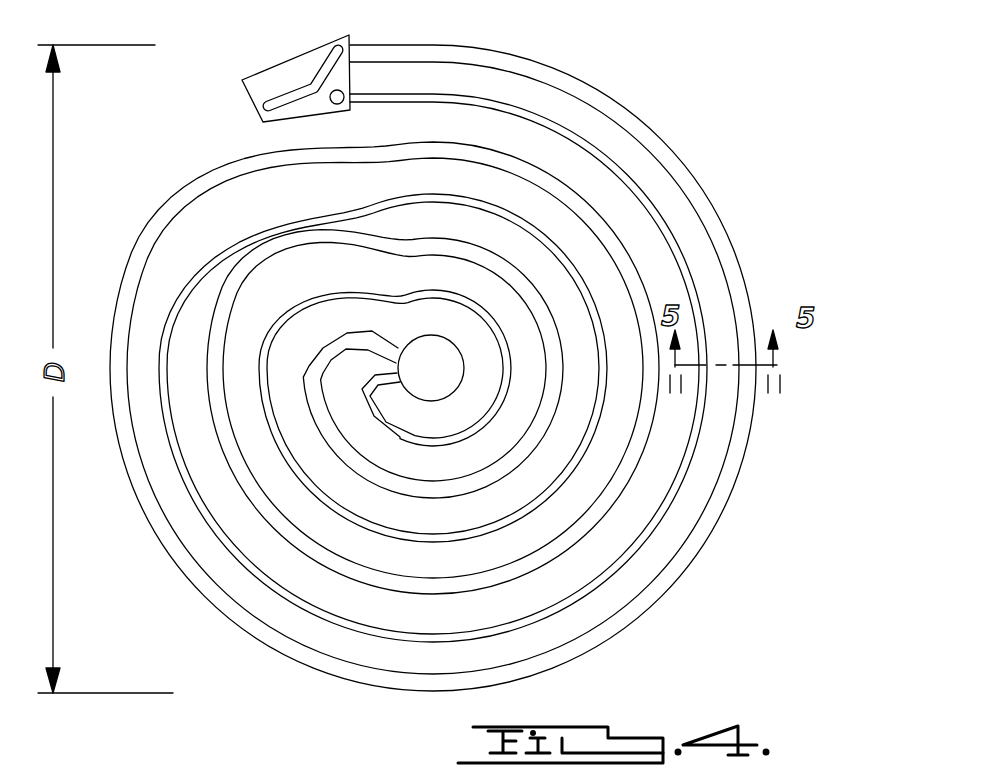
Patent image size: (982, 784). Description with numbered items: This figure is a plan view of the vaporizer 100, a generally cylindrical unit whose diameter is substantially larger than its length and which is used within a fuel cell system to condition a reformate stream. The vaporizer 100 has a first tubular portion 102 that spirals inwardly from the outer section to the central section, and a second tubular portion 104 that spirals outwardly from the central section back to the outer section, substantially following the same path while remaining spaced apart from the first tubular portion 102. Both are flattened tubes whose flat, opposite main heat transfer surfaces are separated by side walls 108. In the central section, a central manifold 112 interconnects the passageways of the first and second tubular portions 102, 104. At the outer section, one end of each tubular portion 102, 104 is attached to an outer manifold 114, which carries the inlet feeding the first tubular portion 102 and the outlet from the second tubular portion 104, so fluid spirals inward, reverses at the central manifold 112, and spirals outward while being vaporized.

The vaporizer 100 is at (468, 357).
The first tubular portion 102 is at (693, 455).
The second tubular portion 104 is at (722, 512).
The side walls 108 is at (468, 361).
The central manifold 112 is at (448, 383).
The outer manifold 114 is at (273, 70).